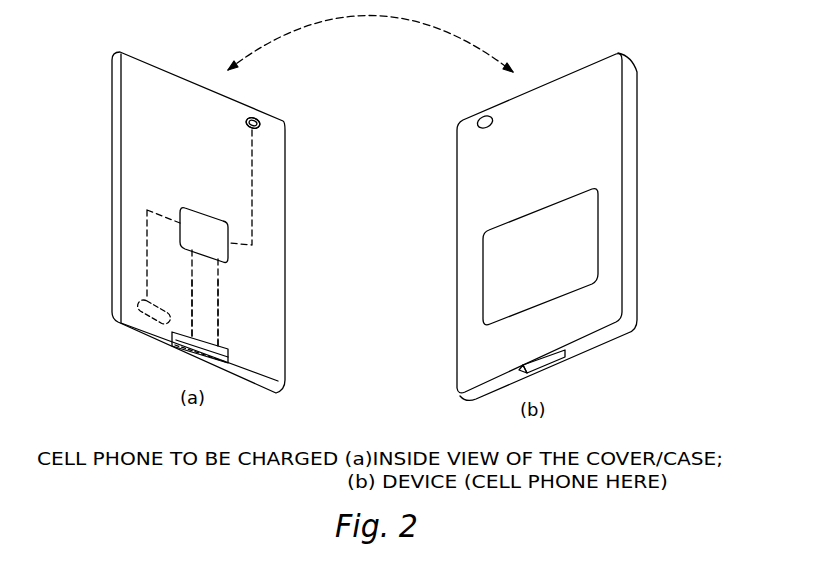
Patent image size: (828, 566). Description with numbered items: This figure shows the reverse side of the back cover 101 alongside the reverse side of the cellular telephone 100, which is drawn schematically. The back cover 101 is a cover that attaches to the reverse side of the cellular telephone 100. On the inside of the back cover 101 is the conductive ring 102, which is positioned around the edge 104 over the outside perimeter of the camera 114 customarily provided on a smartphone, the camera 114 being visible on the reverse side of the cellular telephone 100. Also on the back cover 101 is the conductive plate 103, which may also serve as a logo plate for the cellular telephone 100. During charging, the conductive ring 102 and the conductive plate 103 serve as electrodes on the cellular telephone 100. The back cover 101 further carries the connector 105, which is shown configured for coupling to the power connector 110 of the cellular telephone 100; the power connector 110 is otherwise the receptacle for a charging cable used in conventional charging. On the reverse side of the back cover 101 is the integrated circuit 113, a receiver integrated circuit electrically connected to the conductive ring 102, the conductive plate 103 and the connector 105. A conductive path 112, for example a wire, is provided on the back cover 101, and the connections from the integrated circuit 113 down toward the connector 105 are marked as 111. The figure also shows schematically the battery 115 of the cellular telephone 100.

The cellular telephone 100 is at (597, 60).
The back cover 101 is at (146, 60).
The conductive ring 102 is at (246, 123).
The conductive plate 103 is at (152, 319).
The edge 104 is at (253, 118).
The connector 105 is at (223, 349).
The power connector 110 is at (553, 367).
The wiring to connector 111 is at (195, 296).
The conductive path 112 is at (252, 155).
The integrated circuit 113 is at (197, 208).
The camera 114 is at (489, 127).
The battery 115 is at (551, 203).